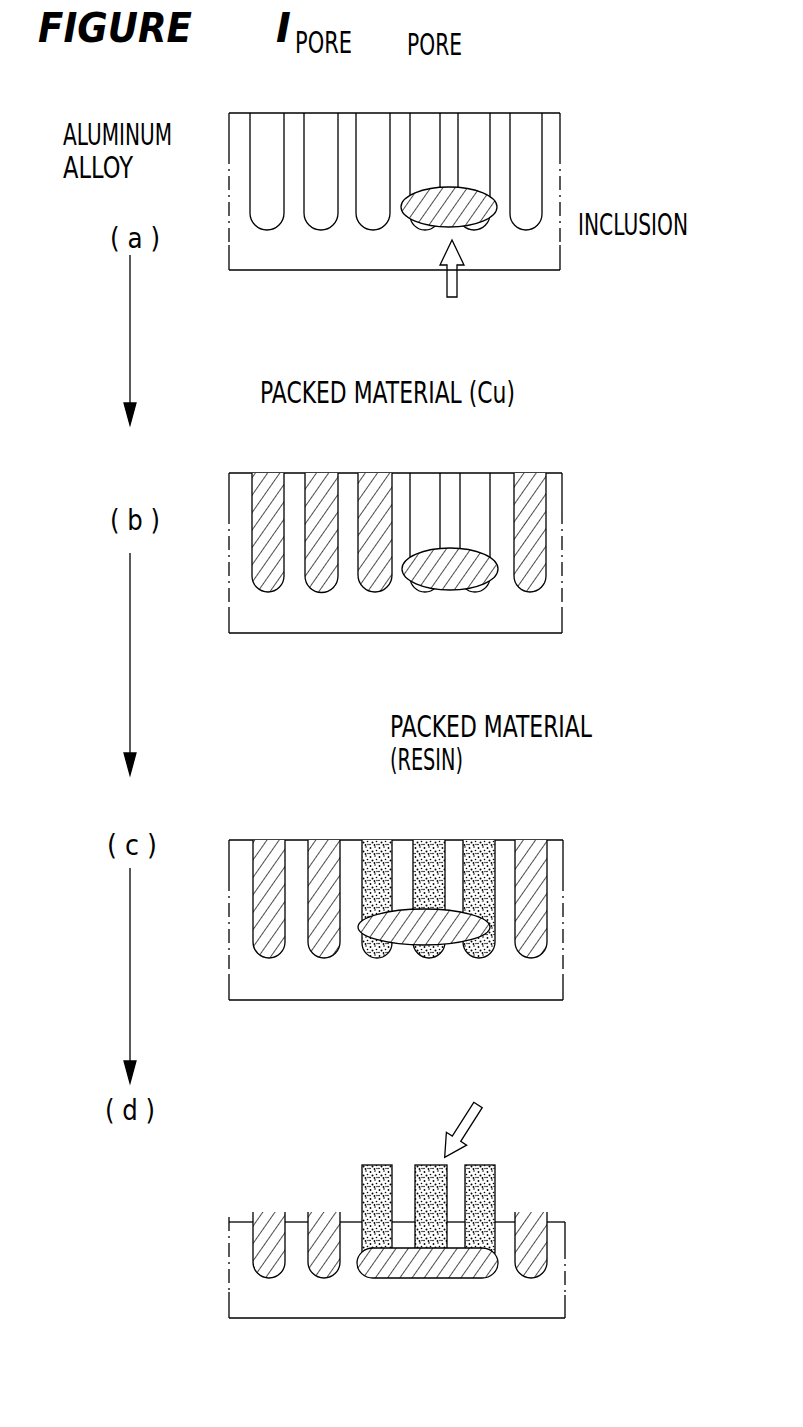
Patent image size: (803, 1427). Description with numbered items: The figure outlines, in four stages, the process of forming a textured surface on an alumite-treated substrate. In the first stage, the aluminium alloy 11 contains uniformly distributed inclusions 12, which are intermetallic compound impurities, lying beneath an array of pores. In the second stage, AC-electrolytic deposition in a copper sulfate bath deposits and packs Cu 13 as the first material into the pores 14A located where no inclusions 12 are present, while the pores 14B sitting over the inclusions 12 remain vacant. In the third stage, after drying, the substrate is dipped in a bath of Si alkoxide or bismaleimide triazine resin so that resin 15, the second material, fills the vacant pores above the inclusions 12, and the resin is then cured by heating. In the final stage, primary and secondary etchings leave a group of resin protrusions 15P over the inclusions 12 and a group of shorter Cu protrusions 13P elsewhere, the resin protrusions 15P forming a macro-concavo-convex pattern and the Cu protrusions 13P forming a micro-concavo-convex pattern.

The aluminium alloy 11 is at (238, 166).
The inclusions 12 is at (484, 217).
The Cu 13 is at (325, 495).
The pores 14A is at (370, 130).
The pores 14B is at (476, 135).
The resin 15 is at (428, 858).
The Cu protrusions 13P is at (320, 1218).
The resin protrusions 15P is at (372, 1178).